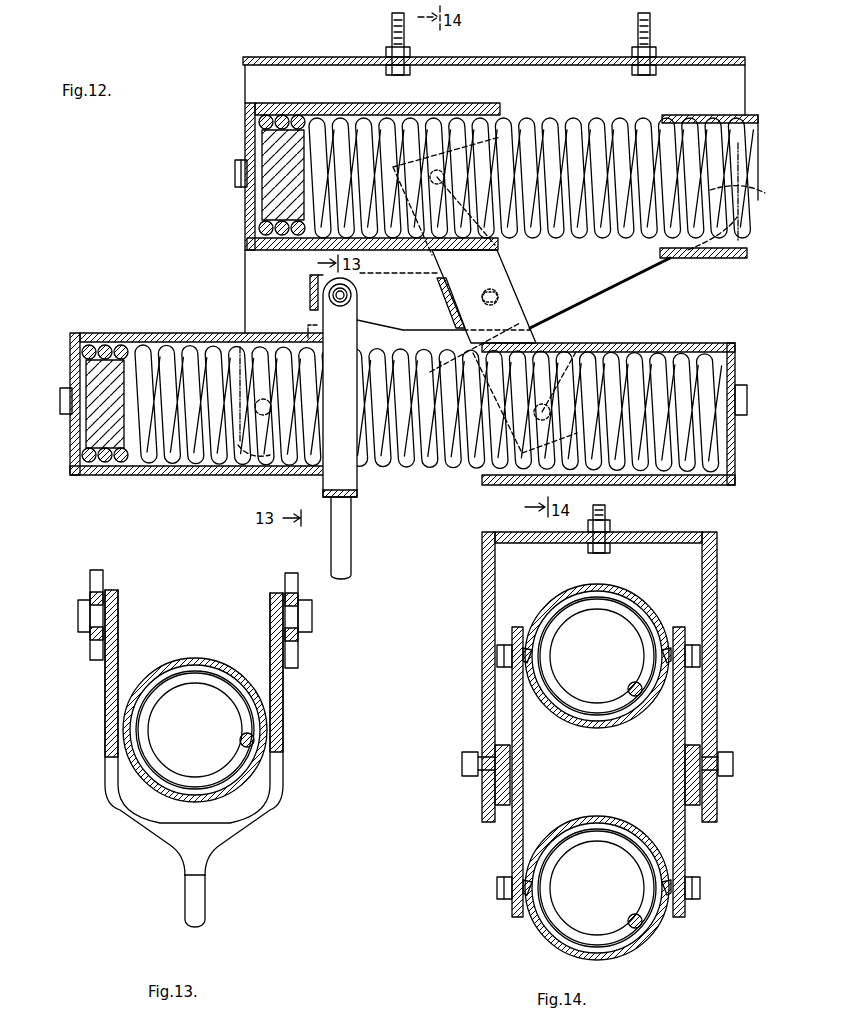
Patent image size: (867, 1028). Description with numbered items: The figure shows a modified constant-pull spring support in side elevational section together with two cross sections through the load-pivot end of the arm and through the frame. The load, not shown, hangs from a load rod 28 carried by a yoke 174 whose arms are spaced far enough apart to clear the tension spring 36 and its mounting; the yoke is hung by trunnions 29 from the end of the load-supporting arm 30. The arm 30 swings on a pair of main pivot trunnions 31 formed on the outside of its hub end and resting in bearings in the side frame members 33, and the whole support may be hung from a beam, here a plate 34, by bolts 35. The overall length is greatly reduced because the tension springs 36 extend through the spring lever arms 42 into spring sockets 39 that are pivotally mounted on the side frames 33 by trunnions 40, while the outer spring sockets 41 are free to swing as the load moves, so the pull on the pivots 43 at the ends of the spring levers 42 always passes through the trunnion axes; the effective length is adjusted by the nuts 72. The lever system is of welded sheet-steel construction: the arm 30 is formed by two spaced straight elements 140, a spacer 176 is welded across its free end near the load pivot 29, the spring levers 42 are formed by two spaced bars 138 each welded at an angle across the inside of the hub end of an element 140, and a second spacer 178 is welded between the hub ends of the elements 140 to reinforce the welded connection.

In FIG. 12, the load rod 28 is at (352, 567).
In FIG. 13, the load rod 28 is at (205, 909).
In FIG. 12, the load pivot 29 is at (330, 295).
In FIG. 13, the load pivot 29 is at (80, 615).
In FIG. 12, the supporting arm 30 is at (404, 284).
In FIG. 12, the main pivot shaft 31 is at (500, 296).
In FIG. 14, the main pivot shaft 31 is at (480, 752).
In FIG. 12, the side frame members 33 is at (628, 272).
In FIG. 14, the side frame members 33 is at (488, 678).
In FIG. 12, the mounting plate 34 is at (505, 57).
In FIG. 12, the bolts 35 is at (404, 35).
In FIG. 14, the bolts 35 is at (599, 529).
In FIG. 12, the tension springs 36 is at (580, 128).
In FIG. 13, the tension springs 36 is at (209, 690).
In FIG. 14, the tension springs 36 is at (610, 606).
In FIG. 12, the spring sockets 39 is at (742, 257).
In FIG. 13, the spring sockets 39 is at (195, 659).
In FIG. 12, the trunnions 40 is at (747, 188).
In FIG. 12, the spring sockets 41 is at (260, 105).
In FIG. 14, the spring sockets 41 is at (612, 724).
In FIG. 12, the spring levers 42 is at (512, 262).
In FIG. 14, the spring levers 42 is at (697, 708).
In FIG. 12, the pivots 43 is at (500, 138).
In FIG. 14, the pivots 43 is at (497, 655).
In FIG. 12, the nuts 72 is at (236, 178).
In FIG. 14, the spaced bars 138 is at (522, 770).
In FIG. 13, the spaced straight elements 140 is at (92, 638).
In FIG. 12, the yoke 174 is at (358, 482).
In FIG. 13, the yoke 174 is at (285, 763).
In FIG. 12, the spacer 176 is at (310, 298).
In FIG. 12, the second spacer 178 is at (445, 305).